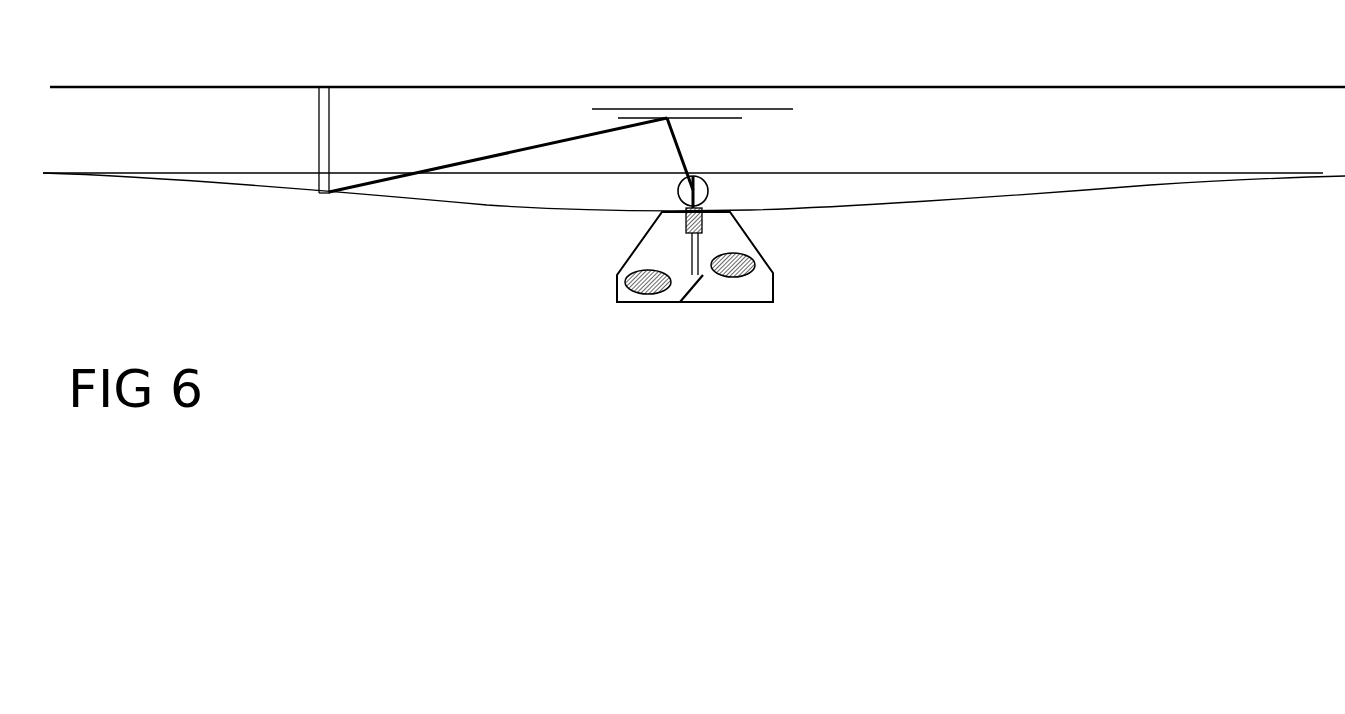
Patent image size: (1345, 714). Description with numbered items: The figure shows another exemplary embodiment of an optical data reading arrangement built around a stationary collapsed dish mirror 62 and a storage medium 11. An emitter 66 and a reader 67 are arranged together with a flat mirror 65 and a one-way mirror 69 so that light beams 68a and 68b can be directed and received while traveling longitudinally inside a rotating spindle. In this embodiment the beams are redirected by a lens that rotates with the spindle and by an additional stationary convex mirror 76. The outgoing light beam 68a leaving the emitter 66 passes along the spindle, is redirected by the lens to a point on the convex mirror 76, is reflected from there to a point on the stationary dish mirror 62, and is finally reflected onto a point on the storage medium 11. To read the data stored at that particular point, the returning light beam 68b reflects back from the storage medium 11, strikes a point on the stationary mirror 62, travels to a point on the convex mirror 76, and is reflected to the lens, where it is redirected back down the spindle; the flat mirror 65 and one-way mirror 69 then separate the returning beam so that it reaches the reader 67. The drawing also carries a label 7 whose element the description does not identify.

The storage medium 11 is at (632, 87).
The stationary collapsed dish mirror 62 is at (885, 205).
The light beam 68a is at (318, 120).
The light beam 68b is at (330, 120).
The stationary convex mirror 76 is at (743, 118).
The swivel ring 7 is at (678, 193).
The one-way mirror 69 is at (683, 254).
The emitter 66 is at (645, 293).
The reader 67 is at (750, 270).
The flat mirror 65 is at (693, 302).